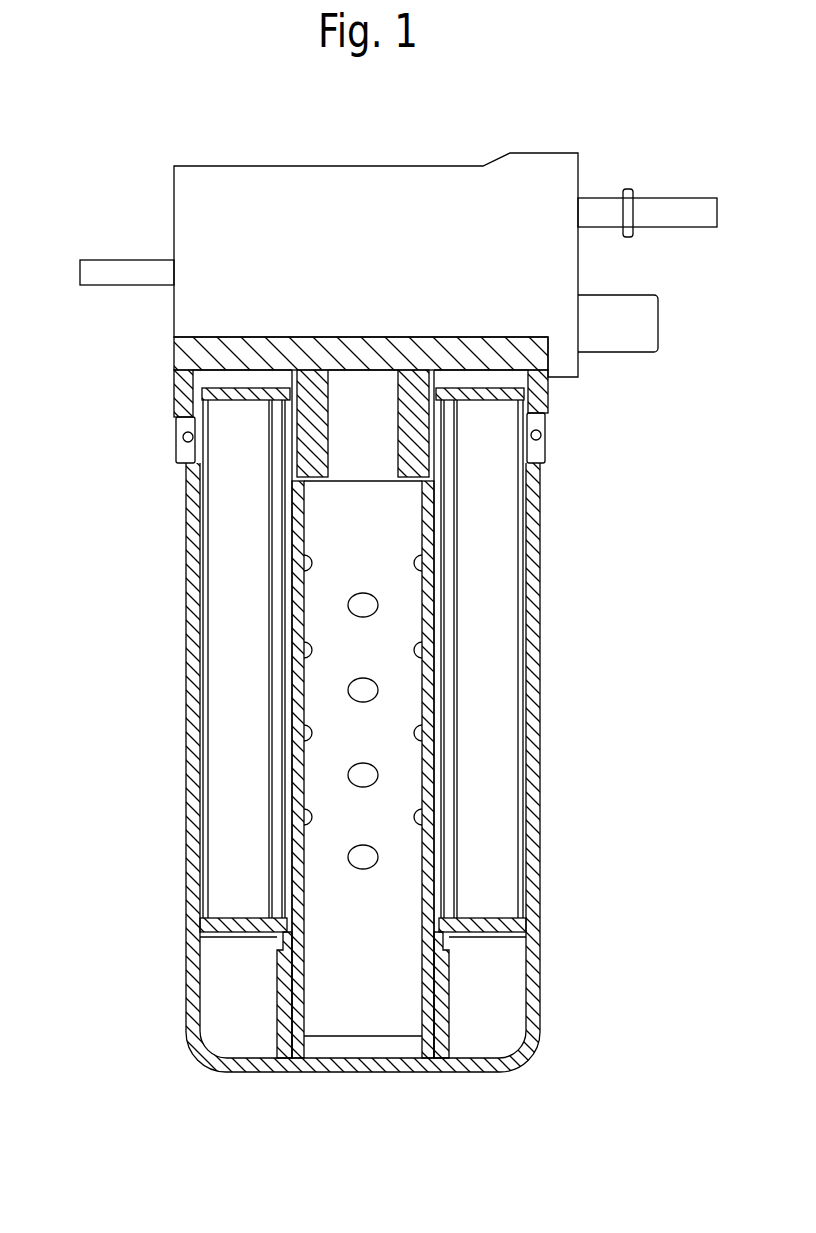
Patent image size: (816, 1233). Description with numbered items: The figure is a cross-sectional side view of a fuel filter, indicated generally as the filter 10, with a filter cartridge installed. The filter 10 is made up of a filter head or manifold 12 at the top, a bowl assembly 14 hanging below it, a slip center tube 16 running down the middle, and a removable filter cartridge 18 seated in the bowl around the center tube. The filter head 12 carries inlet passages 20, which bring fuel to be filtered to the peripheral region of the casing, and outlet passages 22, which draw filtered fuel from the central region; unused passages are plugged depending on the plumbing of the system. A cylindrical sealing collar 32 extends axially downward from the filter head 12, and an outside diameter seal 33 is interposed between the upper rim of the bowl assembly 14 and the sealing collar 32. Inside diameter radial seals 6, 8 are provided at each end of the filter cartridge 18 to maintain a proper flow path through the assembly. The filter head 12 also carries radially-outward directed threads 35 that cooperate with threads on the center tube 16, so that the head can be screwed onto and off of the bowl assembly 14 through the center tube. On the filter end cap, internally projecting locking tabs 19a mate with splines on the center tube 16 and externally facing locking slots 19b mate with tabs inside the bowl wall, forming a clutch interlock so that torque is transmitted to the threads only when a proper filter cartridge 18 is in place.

The filter 10 is at (594, 143).
The filter head 12 is at (195, 195).
The bowl assembly 14 is at (186, 735).
The slip center tube 16 is at (458, 995).
The filter cartridge 18 is at (495, 694).
The interior locking tabs 19a is at (462, 915).
The exterior locking slots 19b is at (538, 918).
The inlet passages 20 is at (699, 232).
The outlet passages 22 is at (93, 285).
The cylindrical sealing collar 32 is at (176, 452).
The outside diameter seal 33 is at (546, 433).
The radially-outward directed threads 35 is at (297, 437).
The inside diameter radial seal 6 is at (262, 377).
The inside diameter radial seal 8 is at (285, 934).